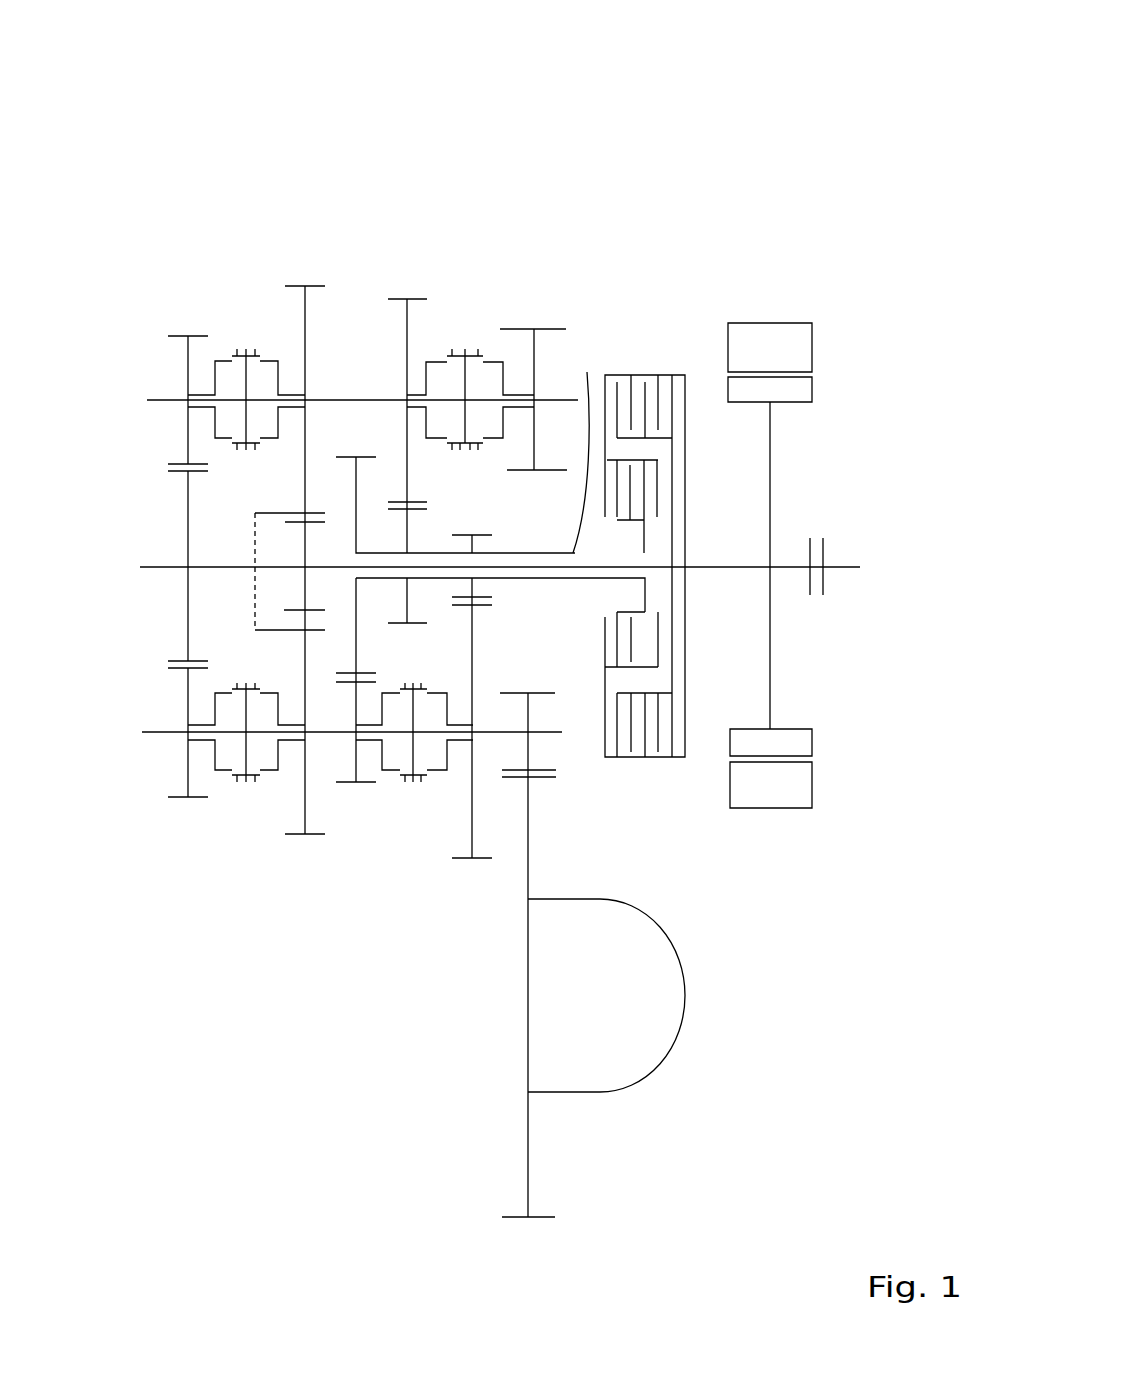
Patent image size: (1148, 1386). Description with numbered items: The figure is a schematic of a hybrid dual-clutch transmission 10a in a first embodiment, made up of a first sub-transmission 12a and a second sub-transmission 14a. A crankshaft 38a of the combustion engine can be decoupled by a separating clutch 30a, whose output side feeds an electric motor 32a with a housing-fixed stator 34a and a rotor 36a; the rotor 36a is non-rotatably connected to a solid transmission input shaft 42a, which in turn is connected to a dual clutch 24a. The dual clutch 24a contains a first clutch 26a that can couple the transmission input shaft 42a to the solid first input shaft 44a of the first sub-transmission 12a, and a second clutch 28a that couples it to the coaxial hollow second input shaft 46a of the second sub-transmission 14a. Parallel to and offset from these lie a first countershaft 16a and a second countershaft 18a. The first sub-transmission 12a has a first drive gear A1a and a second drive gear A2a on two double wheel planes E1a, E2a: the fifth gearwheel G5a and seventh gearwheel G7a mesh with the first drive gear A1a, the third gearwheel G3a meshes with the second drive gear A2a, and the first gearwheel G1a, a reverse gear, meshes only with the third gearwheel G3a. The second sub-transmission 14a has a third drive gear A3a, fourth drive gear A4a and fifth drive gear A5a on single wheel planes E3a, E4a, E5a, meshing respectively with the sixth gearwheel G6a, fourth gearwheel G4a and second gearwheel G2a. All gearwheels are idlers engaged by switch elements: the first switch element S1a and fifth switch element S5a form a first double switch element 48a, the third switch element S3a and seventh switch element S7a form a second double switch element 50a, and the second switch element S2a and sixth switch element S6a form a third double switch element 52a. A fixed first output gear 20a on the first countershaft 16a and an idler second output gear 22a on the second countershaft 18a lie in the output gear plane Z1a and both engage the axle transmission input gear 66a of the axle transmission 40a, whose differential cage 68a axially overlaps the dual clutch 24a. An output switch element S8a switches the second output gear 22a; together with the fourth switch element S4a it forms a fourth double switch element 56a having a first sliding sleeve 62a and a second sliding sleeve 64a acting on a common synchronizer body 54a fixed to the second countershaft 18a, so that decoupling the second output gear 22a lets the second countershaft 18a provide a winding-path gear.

The hybrid dual-clutch transmission 10a is at (768, 125).
The first sub-transmission 12a is at (221, 233).
The second sub-transmission 14a is at (434, 264).
The first countershaft 16a is at (142, 735).
The second countershaft 18a is at (158, 398).
The first output gear 20a is at (473, 793).
The second output gear 22a is at (587, 372).
The dual clutch 24a is at (755, 474).
The first clutch 26a is at (690, 415).
The second clutch 28a is at (660, 482).
The separating clutch 30a is at (818, 600).
The electric motor 32a is at (821, 845).
The stator 34a is at (785, 787).
The rotor 36a is at (785, 739).
The crankshaft 38a is at (862, 567).
The axle transmission 40a is at (640, 997).
The transmission input shaft 42a is at (788, 570).
The first input shaft 44a is at (142, 567).
The second input shaft 46a is at (588, 372).
The first double switch element 48a is at (247, 790).
The second double switch element 50a is at (246, 345).
The third double switch element 52a is at (412, 790).
The synchronizer body 54a is at (424, 382).
The fourth double switch element 56a is at (495, 352).
The first sliding sleeve 62a is at (485, 452).
The second sliding sleeve 64a is at (457, 452).
The axle transmission input gear 66a is at (528, 873).
The differential cage 68a is at (640, 1080).
The first drive gear A1a is at (185, 478).
The second drive gear A2a is at (283, 610).
The third drive gear A3a is at (403, 522).
The fourth drive gear A4a is at (404, 526).
The fifth drive gear A5a is at (480, 595).
The first wheel plane E1a is at (188, 808).
The second wheel plane E2a is at (357, 792).
The third wheel plane E3a is at (305, 848).
The fourth wheel plane E4a is at (407, 290).
The fifth wheel plane E5a is at (468, 875).
The first gearwheel G1a is at (303, 657).
The second gearwheel G2a is at (532, 745).
The third gearwheel G3a is at (303, 335).
The fourth gearwheel G4a is at (405, 353).
The fifth gearwheel G5a is at (188, 700).
The sixth gearwheel G6a is at (357, 750).
The seventh gearwheel G7a is at (188, 430).
The first switch element S1a is at (272, 778).
The second switch element S2a is at (441, 780).
The third switch element S3a is at (271, 352).
The fourth switch element S4a is at (465, 330).
The fifth switch element S5a is at (222, 780).
The sixth switch element S6a is at (388, 780).
The seventh switch element S7a is at (221, 353).
The output switch element S8a is at (535, 316).
The output gear plane Z1a is at (534, 352).